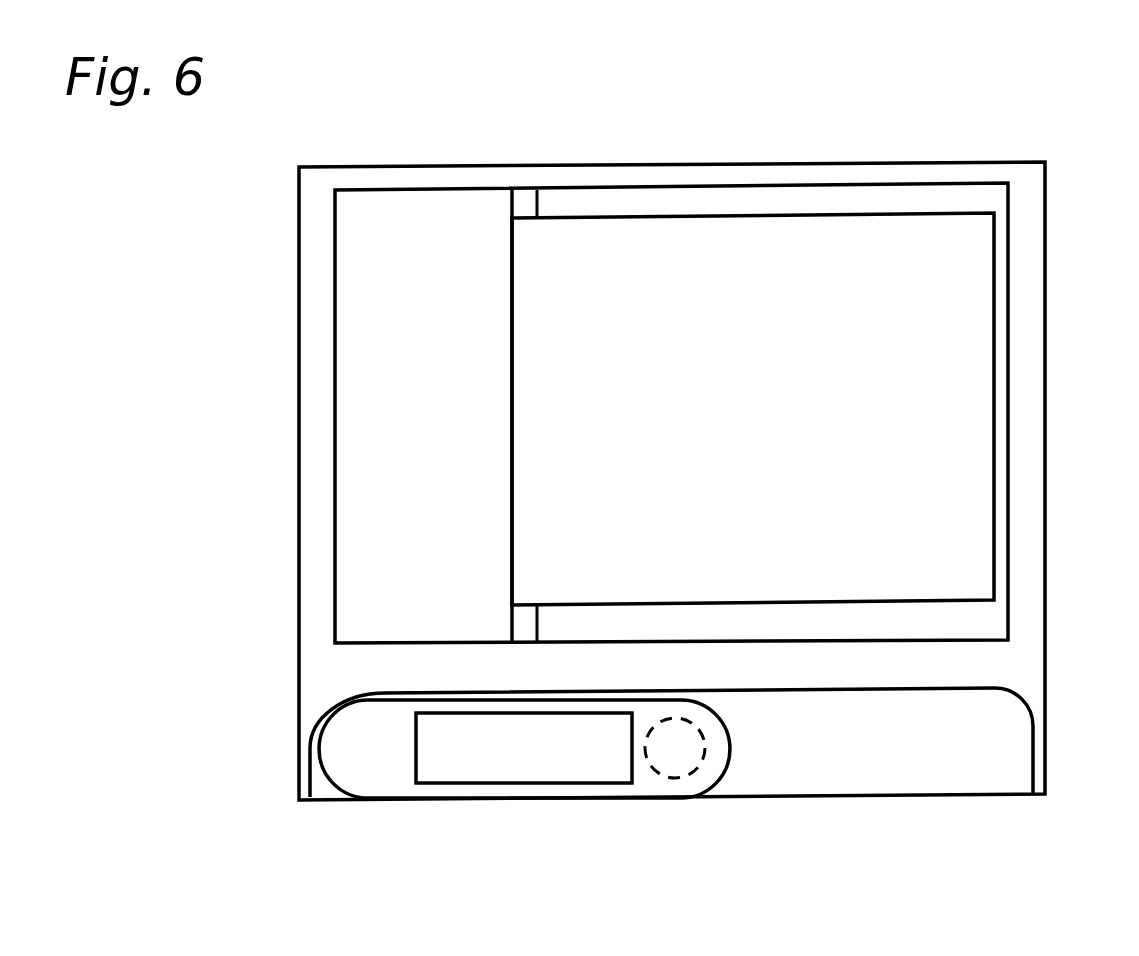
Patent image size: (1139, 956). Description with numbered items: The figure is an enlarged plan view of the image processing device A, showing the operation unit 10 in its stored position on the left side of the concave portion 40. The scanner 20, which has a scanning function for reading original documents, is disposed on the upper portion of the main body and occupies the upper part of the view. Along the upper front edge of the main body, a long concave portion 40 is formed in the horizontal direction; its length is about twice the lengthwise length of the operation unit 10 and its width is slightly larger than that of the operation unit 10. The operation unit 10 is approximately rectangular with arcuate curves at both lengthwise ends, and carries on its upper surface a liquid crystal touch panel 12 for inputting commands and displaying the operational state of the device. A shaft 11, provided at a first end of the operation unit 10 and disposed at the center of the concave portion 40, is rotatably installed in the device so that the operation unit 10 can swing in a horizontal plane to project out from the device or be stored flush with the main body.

The image processing device A is at (706, 400).
The scanner 20 is at (683, 303).
The concave portion 40 is at (893, 760).
The operation unit 10 is at (367, 752).
The liquid crystal touch panel 12 is at (483, 752).
The shaft 11 is at (675, 790).